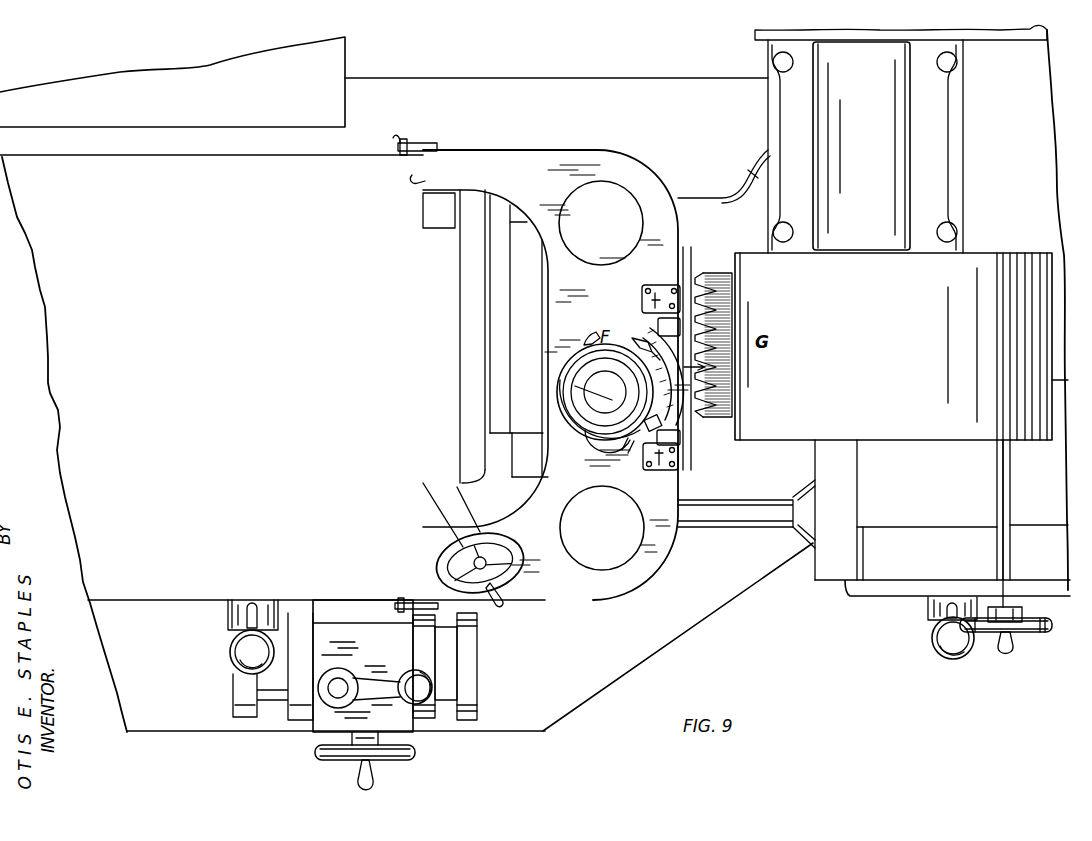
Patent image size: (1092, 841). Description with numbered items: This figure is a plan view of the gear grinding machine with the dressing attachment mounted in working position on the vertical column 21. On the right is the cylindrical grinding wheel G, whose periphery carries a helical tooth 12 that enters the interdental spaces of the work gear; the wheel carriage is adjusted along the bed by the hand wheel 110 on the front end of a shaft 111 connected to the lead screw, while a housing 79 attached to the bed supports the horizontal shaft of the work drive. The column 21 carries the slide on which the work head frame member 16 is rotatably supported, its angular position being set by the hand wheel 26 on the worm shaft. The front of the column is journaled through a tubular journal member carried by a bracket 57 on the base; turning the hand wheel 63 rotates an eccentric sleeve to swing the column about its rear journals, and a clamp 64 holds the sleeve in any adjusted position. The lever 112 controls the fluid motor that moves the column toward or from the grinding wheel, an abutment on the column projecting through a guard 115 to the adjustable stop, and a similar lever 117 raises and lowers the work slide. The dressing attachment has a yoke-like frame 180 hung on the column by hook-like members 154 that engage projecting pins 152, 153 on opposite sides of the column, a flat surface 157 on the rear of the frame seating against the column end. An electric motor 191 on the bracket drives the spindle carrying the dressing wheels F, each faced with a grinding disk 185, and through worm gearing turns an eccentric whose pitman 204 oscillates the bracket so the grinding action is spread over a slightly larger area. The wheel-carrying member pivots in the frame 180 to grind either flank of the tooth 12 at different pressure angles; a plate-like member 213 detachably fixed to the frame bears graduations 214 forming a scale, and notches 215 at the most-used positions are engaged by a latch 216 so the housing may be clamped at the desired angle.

The helical tooth 12 is at (522, 350).
The work head frame member 16 is at (497, 300).
The vertical column 21 is at (72, 404).
The hand wheel 26 is at (450, 561).
The bracket 57 is at (470, 728).
The hand wheel 63 is at (318, 753).
The clamp 64 is at (372, 674).
The housing 79 is at (758, 174).
The hand wheel 110 is at (1044, 642).
The shaft 111 is at (1005, 553).
The lever 112 is at (235, 655).
The guard 115 is at (703, 540).
The lever 117 is at (935, 638).
The projecting pin 152 is at (392, 612).
The projecting pin 153 is at (400, 141).
The hook-like member 154 is at (398, 600).
The flat surface 157 is at (425, 181).
The frame 180 is at (644, 186).
The grinding disk 185 is at (640, 344).
The electric motor 191 is at (583, 397).
The pitman 204 is at (590, 340).
The plate-like member 213 is at (702, 273).
The graduations 214 is at (680, 420).
The notches 215 is at (654, 300).
The latch 216 is at (678, 455).